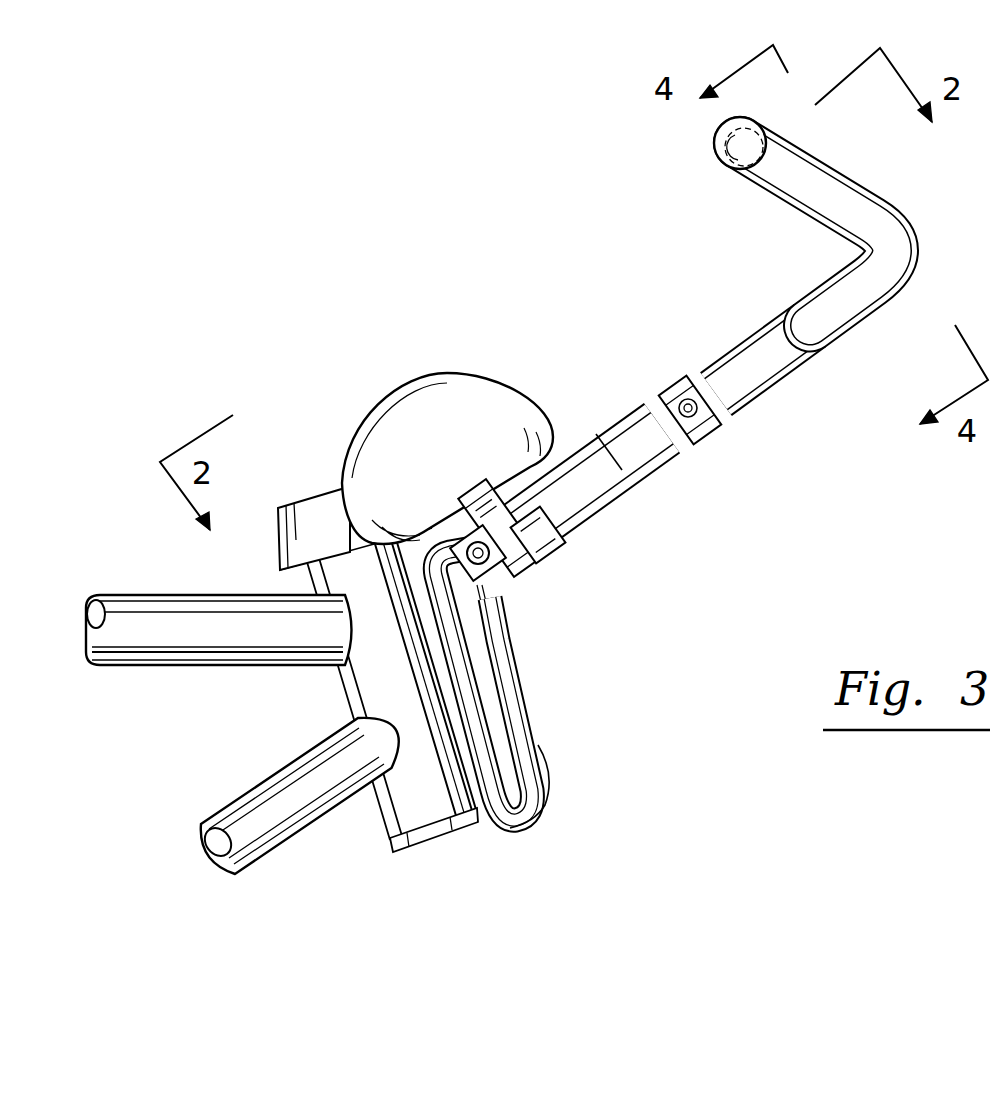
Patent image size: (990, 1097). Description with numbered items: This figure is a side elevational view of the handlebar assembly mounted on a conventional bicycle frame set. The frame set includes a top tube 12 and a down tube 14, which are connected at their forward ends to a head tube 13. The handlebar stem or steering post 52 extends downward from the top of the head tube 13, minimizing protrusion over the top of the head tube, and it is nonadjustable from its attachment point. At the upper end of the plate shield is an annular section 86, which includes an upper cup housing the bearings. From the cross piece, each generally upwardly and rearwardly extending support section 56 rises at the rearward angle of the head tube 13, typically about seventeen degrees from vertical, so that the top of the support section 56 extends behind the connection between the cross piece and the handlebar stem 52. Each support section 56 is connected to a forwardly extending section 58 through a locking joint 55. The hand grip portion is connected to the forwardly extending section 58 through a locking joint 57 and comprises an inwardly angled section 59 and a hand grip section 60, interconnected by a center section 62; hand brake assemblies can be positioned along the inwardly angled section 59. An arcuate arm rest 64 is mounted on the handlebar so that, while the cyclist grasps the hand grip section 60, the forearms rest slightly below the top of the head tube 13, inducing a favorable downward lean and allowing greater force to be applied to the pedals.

The top tube 12 is at (148, 595).
The head tube 13 is at (357, 688).
The down tube 14 is at (253, 793).
The handlebar stem 52 is at (550, 484).
The locking joint 55 is at (493, 582).
The support section 56 is at (513, 680).
The locking joint 57 is at (712, 427).
The forwardly extending section 58 is at (620, 483).
The inwardly angled section 59 is at (800, 358).
The hand grip section 60 is at (822, 160).
The center section 62 is at (722, 146).
The arm rest 64 is at (473, 362).
The annular section 86 is at (277, 545).